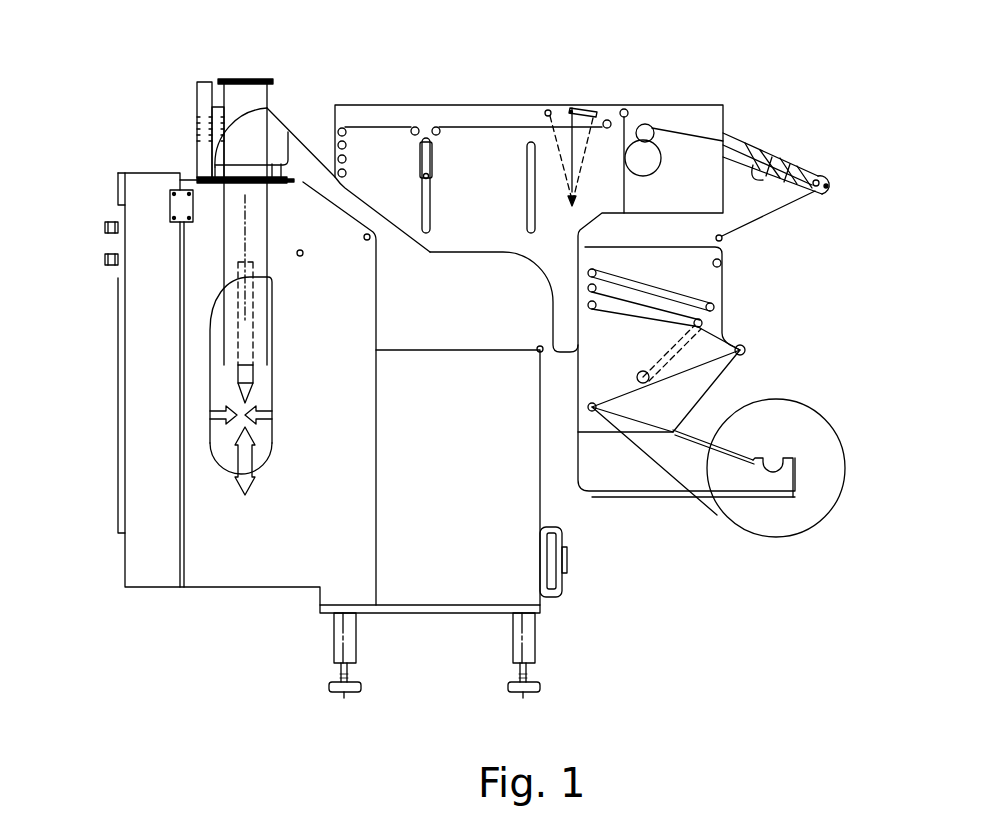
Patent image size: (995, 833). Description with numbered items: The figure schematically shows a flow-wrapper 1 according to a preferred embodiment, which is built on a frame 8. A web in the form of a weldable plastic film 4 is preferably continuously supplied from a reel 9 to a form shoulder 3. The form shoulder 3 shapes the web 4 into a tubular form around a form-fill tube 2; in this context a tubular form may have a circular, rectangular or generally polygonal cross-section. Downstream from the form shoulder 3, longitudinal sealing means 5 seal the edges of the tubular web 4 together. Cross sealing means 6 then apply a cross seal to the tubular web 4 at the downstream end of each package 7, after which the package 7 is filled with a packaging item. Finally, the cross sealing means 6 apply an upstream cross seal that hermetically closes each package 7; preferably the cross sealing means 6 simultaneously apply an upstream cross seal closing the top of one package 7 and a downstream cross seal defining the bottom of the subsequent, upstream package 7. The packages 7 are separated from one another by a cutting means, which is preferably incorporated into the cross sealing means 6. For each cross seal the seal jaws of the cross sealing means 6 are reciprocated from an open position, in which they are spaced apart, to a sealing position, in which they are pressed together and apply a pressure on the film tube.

The flow-wrapper 1 is at (466, 90).
The form-fill tube 2 is at (240, 82).
The form shoulder 3 is at (262, 110).
The web 4 is at (302, 136).
The longitudinal sealing means 5 is at (243, 302).
The cross sealing means 6 is at (232, 422).
The package 7 is at (243, 465).
The frame 8 is at (413, 582).
The reel 9 is at (764, 523).